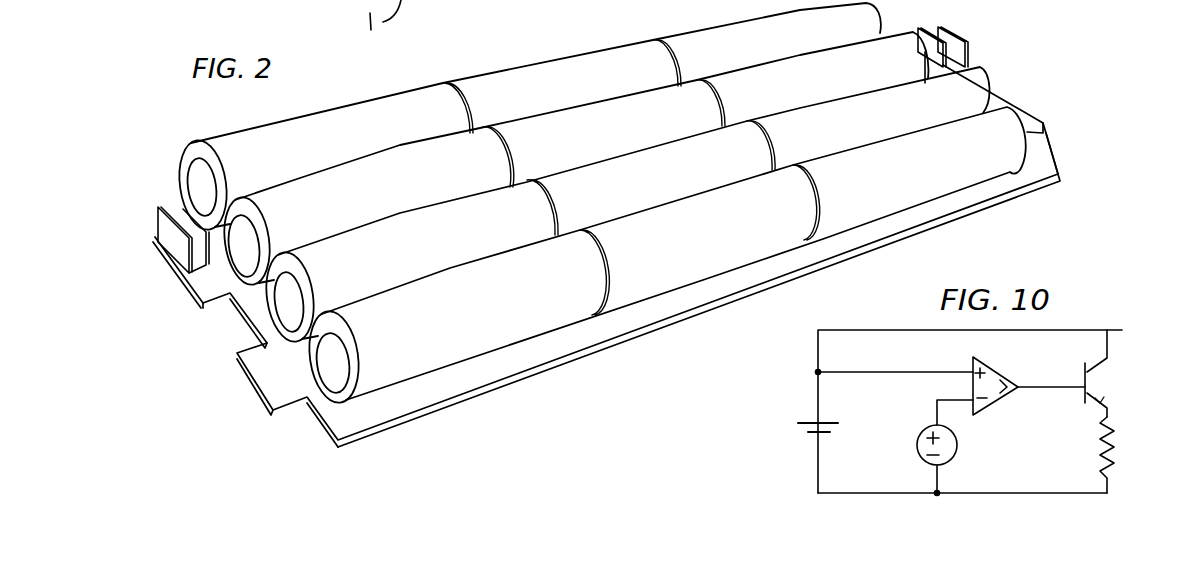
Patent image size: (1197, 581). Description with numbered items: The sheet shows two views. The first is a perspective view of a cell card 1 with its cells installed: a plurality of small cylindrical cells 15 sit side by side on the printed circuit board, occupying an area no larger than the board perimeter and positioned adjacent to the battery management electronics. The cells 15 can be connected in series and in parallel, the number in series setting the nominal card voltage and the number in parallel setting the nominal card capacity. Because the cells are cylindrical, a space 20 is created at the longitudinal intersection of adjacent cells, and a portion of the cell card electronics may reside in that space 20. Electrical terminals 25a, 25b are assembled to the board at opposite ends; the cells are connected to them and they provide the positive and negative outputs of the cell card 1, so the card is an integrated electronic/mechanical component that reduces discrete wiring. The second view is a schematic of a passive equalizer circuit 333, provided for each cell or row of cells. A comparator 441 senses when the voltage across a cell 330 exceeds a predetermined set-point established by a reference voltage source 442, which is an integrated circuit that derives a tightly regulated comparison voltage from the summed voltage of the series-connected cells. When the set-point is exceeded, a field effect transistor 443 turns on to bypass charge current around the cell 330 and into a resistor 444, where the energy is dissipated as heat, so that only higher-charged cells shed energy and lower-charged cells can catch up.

In FIG. 2, the cell card 1 is at (630, 347).
In FIG. 2, the cells 15 is at (958, 176).
In FIG. 2, the space 20 is at (443, 357).
In FIG. 2, the terminal 25a is at (178, 245).
In FIG. 2, the terminal 25b is at (965, 42).
In FIG. 10, the cell 330 is at (805, 423).
In FIG. 10, the equalizer circuit 333 is at (900, 493).
In FIG. 10, the comparator 441 is at (993, 412).
In FIG. 10, the reference voltage source 442 is at (956, 460).
In FIG. 10, the field effect transistor 443 is at (1102, 402).
In FIG. 10, the resistor 444 is at (1113, 452).